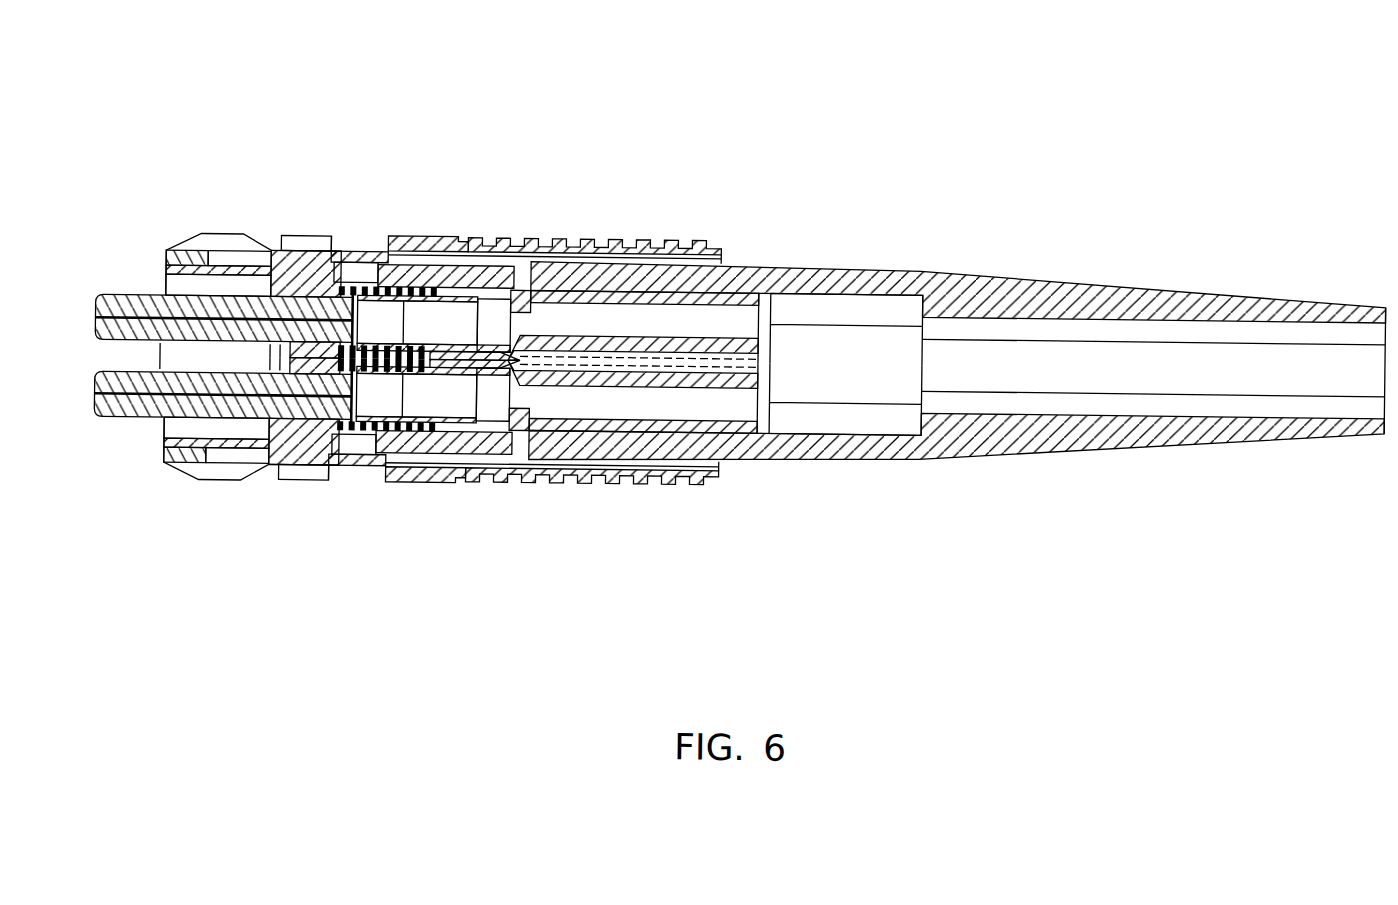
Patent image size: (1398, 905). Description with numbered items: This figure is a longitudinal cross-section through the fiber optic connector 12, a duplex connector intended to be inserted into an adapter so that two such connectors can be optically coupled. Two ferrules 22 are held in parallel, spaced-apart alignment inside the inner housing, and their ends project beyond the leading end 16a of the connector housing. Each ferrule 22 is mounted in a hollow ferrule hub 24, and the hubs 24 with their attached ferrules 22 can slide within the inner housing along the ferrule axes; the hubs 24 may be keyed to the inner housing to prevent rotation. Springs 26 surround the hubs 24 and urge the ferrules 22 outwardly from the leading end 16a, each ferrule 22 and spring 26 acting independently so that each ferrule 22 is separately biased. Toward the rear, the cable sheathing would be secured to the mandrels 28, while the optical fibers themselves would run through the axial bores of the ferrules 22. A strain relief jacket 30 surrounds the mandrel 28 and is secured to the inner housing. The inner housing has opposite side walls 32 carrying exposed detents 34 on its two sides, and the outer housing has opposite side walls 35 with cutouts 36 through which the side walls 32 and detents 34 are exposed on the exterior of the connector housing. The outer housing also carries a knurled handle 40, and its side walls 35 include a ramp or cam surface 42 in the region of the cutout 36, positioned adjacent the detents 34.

The fiber optic connector 12 is at (554, 180).
The leading end 16a is at (165, 262).
The ferrules 22 is at (96, 318).
The ferrule hubs 24 is at (435, 297).
The springs 26 is at (426, 255).
The mandrels 28 is at (763, 331).
The strain relief jacket 30 is at (1209, 293).
The side walls of the inner housing 32 is at (356, 248).
The detents 34 is at (285, 274).
The side walls of the outer housing 35 is at (418, 262).
The cutouts 36 is at (387, 244).
The knurled handle 40 is at (591, 233).
The ramp or cam surface 42 is at (267, 246).